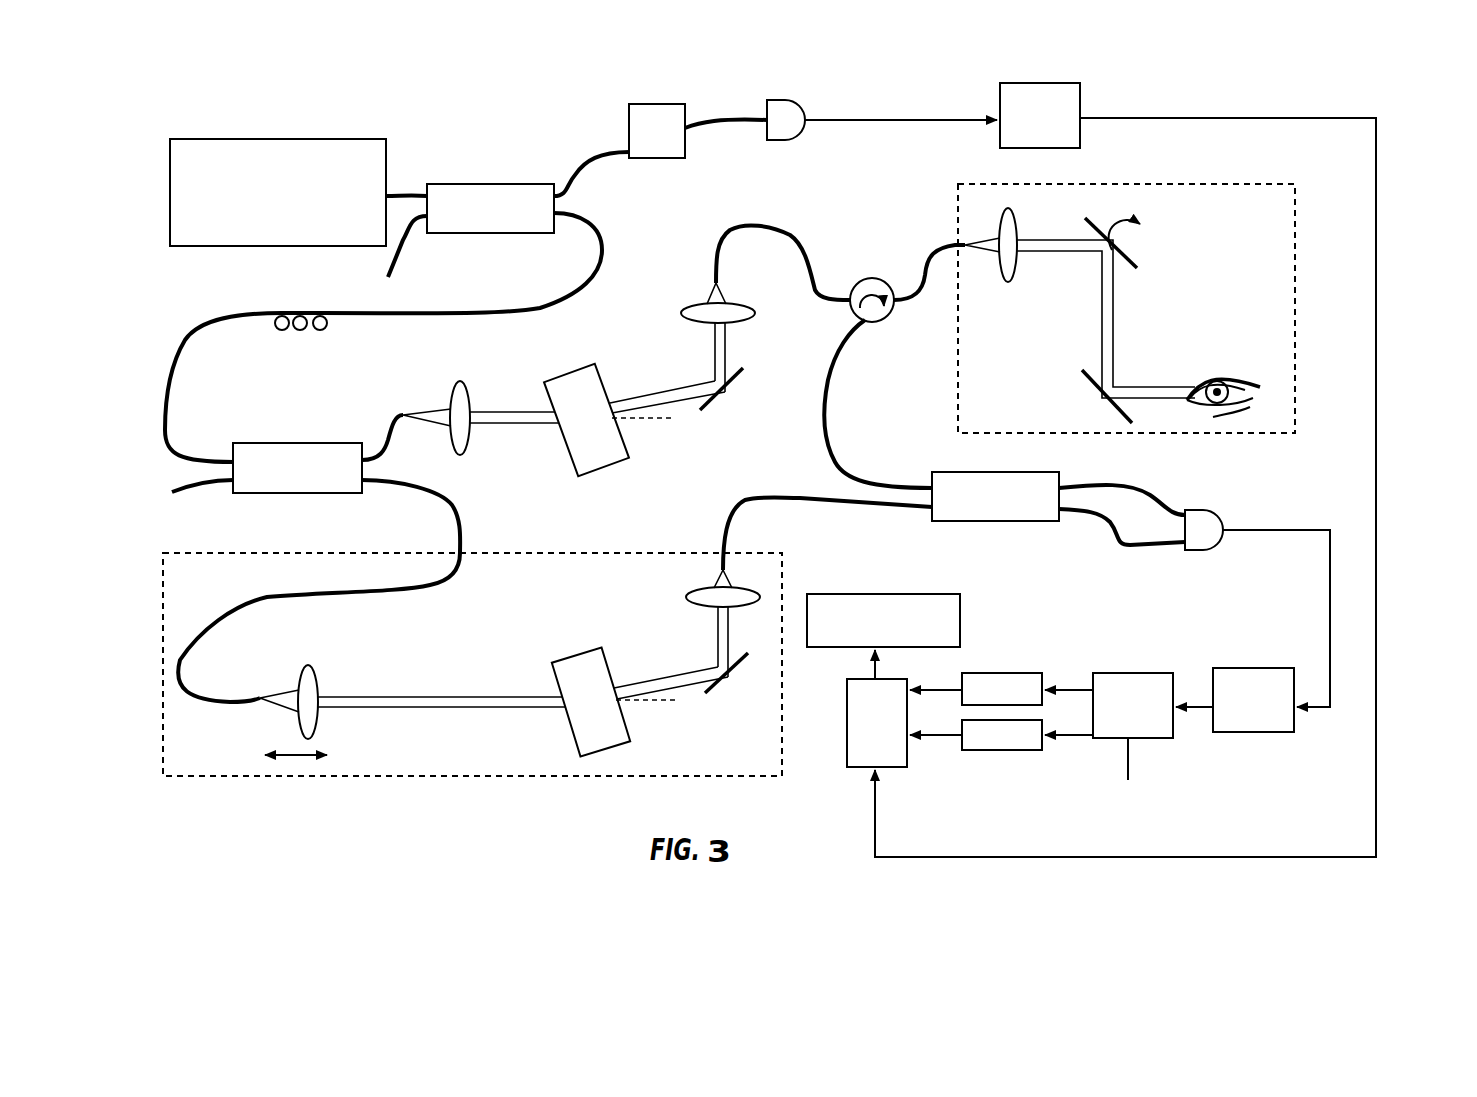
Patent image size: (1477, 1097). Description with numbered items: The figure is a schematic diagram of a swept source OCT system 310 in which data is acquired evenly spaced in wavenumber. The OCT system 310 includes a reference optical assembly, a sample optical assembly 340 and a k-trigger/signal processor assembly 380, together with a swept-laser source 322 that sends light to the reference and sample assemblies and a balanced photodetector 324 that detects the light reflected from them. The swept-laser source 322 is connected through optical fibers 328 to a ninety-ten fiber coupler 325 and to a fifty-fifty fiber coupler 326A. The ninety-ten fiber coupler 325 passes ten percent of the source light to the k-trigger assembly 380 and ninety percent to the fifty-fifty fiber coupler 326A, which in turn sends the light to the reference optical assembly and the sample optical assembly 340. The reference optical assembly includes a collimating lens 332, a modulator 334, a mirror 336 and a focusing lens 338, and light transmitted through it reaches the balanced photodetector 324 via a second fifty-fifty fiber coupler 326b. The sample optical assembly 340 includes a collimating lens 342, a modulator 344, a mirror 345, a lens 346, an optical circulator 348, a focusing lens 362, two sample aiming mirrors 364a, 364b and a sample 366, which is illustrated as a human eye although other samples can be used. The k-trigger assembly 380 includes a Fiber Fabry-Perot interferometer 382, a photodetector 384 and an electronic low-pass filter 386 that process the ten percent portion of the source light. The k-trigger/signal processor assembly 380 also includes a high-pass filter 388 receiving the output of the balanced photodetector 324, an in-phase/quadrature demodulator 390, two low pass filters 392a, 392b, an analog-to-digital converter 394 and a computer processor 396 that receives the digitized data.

The swept source OCT system 310 is at (900, 55).
The swept-laser source 322 is at (383, 139).
The balanced photodetector 324 is at (1210, 511).
The 90/10 fiber coupler 325 is at (481, 184).
The 50/50 fiber coupler 326A is at (262, 443).
The 50/50 fiber coupler 326b is at (975, 472).
The optical fibers 328 is at (598, 155).
The collimating lens 332 is at (312, 671).
The modulator 334 is at (551, 669).
The mirror 336 is at (718, 693).
The focusing lens 338 is at (690, 598).
The sample optical assembly 340 is at (821, 215).
The collimating lens 342 is at (460, 381).
The modulator 344 is at (578, 370).
The mirror 345 is at (725, 398).
The lens 346 is at (695, 306).
The optical circulator 348 is at (858, 318).
The focusing lens 362 is at (1015, 226).
The sample aiming mirror 364a is at (1140, 266).
The sample aiming mirror 364b is at (1105, 397).
The sample 366 is at (1213, 376).
The k-trigger/signal processor assembly 380 is at (1245, 72).
The Fiber Fabry-Perot interferometer 382 is at (662, 104).
The photodetector 384 is at (780, 100).
The electronic low-pass filter 386 is at (1042, 83).
The high-pass filter 388 is at (1260, 733).
The in-phase/quadrature (I/Q) demodulator 390 is at (1128, 673).
The low pass filter 392a is at (990, 673).
The low pass filter 392b is at (995, 750).
The analog-to-digital converter 394 is at (847, 691).
The computer processor 396 is at (925, 594).